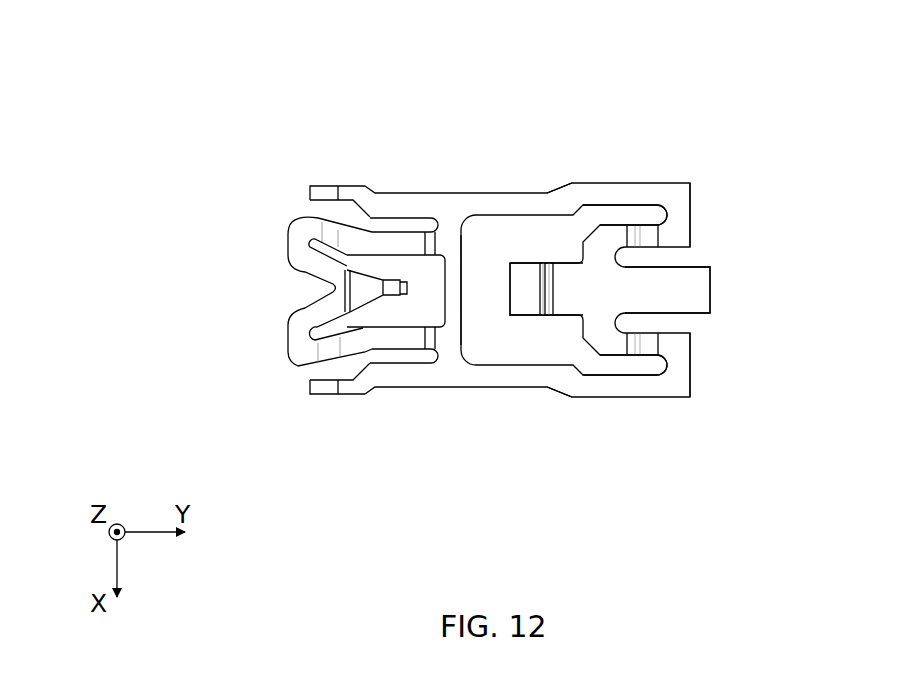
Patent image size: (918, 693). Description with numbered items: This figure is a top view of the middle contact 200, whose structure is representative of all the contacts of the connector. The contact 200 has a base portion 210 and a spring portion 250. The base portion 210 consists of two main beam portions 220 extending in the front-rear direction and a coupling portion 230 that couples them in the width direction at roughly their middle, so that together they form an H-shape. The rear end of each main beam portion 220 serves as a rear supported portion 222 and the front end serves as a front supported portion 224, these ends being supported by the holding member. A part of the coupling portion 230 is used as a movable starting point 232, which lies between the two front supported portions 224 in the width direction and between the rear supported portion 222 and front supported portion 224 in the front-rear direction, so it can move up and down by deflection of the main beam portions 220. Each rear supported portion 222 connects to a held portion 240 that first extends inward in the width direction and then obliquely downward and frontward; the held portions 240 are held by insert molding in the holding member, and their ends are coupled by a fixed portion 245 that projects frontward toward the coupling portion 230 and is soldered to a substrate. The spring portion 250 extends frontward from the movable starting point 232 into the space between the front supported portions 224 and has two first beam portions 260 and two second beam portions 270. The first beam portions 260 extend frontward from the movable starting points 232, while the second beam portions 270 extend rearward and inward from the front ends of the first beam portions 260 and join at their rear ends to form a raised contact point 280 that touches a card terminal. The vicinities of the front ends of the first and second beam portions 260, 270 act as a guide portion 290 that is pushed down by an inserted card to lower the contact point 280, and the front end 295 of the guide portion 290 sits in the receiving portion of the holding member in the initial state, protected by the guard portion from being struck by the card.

The contact 200 is at (607, 128).
The base portion 210 is at (518, 190).
The main beam portion 220 is at (537, 203).
The rear supported portion 222 is at (677, 190).
The front supported portion 224 is at (324, 190).
The coupling portion 230 is at (453, 297).
The movable starting point 232 is at (449, 245).
The held portion 240 is at (645, 235).
The fixed portion 245 is at (523, 312).
The spring portion 250 is at (347, 364).
The first beam portion 260 is at (408, 240).
The second beam portion 270 is at (315, 313).
The contact point 280 is at (383, 280).
The guide portion 290 is at (298, 227).
The front end 295 is at (312, 245).